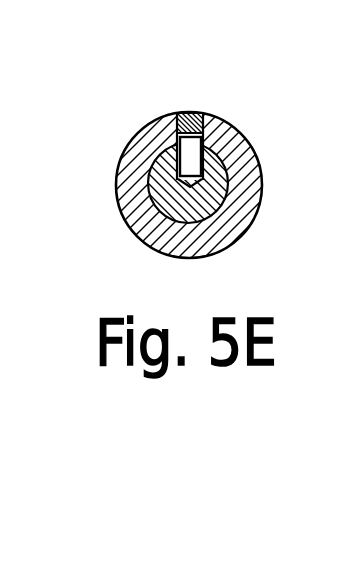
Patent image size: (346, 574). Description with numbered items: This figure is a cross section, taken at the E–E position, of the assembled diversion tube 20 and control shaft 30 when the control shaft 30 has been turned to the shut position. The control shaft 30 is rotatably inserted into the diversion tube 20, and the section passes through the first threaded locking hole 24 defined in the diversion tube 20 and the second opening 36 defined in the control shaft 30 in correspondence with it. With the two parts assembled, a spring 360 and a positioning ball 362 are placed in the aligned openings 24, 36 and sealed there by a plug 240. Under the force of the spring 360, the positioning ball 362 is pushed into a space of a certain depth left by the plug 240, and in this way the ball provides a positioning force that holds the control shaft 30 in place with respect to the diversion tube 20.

The diversion tube 20 is at (254, 204).
The first threaded locking hole 24 is at (177, 135).
The plug 240 is at (198, 114).
The control shaft 30 is at (188, 212).
The second opening 36 is at (182, 179).
The spring 360 is at (203, 147).
The positioning ball 362 is at (178, 160).